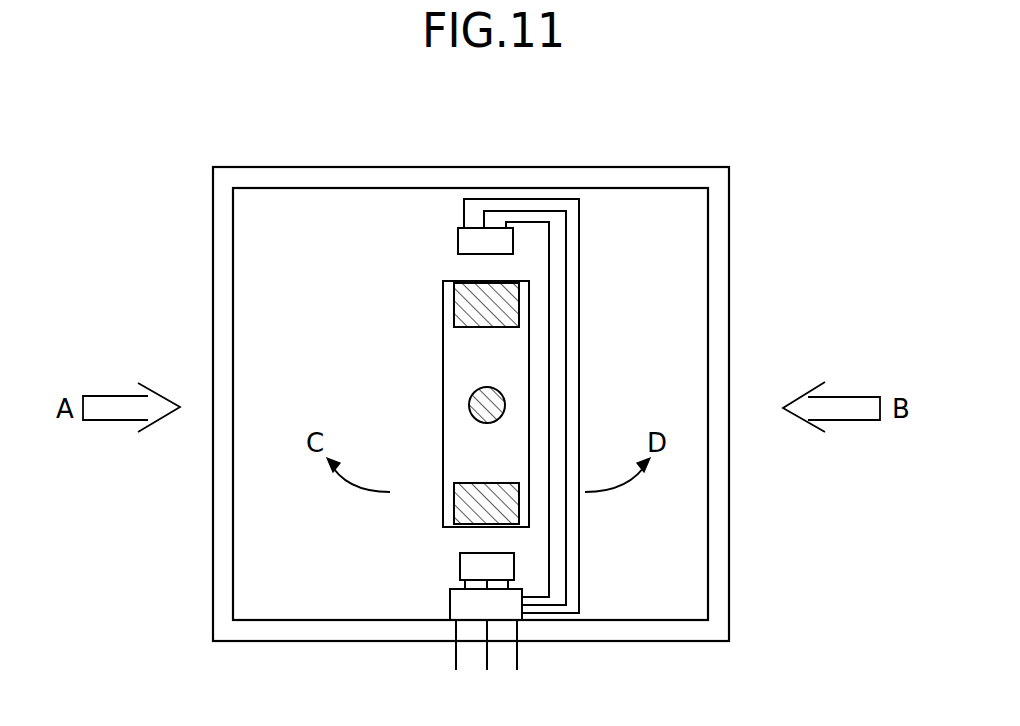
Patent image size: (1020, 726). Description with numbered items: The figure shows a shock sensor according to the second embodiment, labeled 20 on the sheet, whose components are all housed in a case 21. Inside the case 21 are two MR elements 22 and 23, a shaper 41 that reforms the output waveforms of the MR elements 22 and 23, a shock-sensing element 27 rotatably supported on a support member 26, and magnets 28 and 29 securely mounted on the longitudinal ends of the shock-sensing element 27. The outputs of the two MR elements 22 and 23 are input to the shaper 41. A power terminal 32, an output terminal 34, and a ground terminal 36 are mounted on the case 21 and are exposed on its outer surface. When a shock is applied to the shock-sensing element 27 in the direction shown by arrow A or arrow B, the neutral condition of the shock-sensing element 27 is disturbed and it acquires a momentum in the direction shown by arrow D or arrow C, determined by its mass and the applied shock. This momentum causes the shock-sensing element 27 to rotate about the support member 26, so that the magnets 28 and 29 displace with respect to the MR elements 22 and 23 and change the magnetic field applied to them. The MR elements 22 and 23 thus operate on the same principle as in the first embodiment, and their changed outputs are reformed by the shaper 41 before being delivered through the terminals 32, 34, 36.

The sensor unit 20 is at (740, 157).
The case 21 is at (722, 220).
The MR element 22 is at (460, 562).
The MR element 23 is at (458, 240).
The support member 26 is at (469, 405).
The shock-sensing element 27 is at (457, 347).
The magnet 28 is at (455, 513).
The magnet 29 is at (454, 300).
The shaper 41 is at (450, 600).
The power terminal 32 is at (455, 658).
The output terminal 34 is at (488, 658).
The ground terminal 36 is at (517, 658).